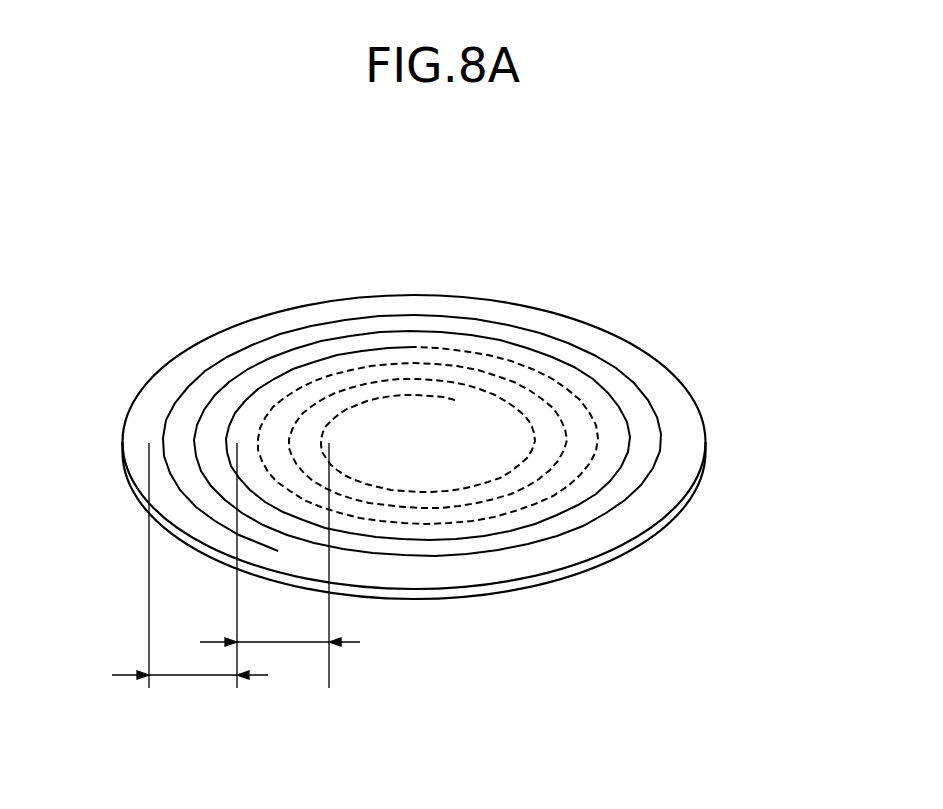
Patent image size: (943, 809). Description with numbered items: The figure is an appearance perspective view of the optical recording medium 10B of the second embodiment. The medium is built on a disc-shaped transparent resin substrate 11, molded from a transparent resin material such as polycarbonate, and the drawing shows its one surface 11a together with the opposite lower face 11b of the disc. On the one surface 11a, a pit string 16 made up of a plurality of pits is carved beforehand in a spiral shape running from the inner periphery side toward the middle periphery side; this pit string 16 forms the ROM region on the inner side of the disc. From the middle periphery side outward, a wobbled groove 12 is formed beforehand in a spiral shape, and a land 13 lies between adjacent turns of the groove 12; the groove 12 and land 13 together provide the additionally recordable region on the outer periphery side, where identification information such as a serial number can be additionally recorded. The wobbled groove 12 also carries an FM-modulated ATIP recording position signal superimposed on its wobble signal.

The optical recording medium 10B is at (258, 230).
The transparent resin substrate 11 is at (581, 322).
The one surface 11a is at (672, 390).
The lower surface of substrate 11b is at (575, 578).
The wobbled groove 12 is at (568, 534).
The land 13 is at (643, 457).
The pit string 16 is at (283, 393).